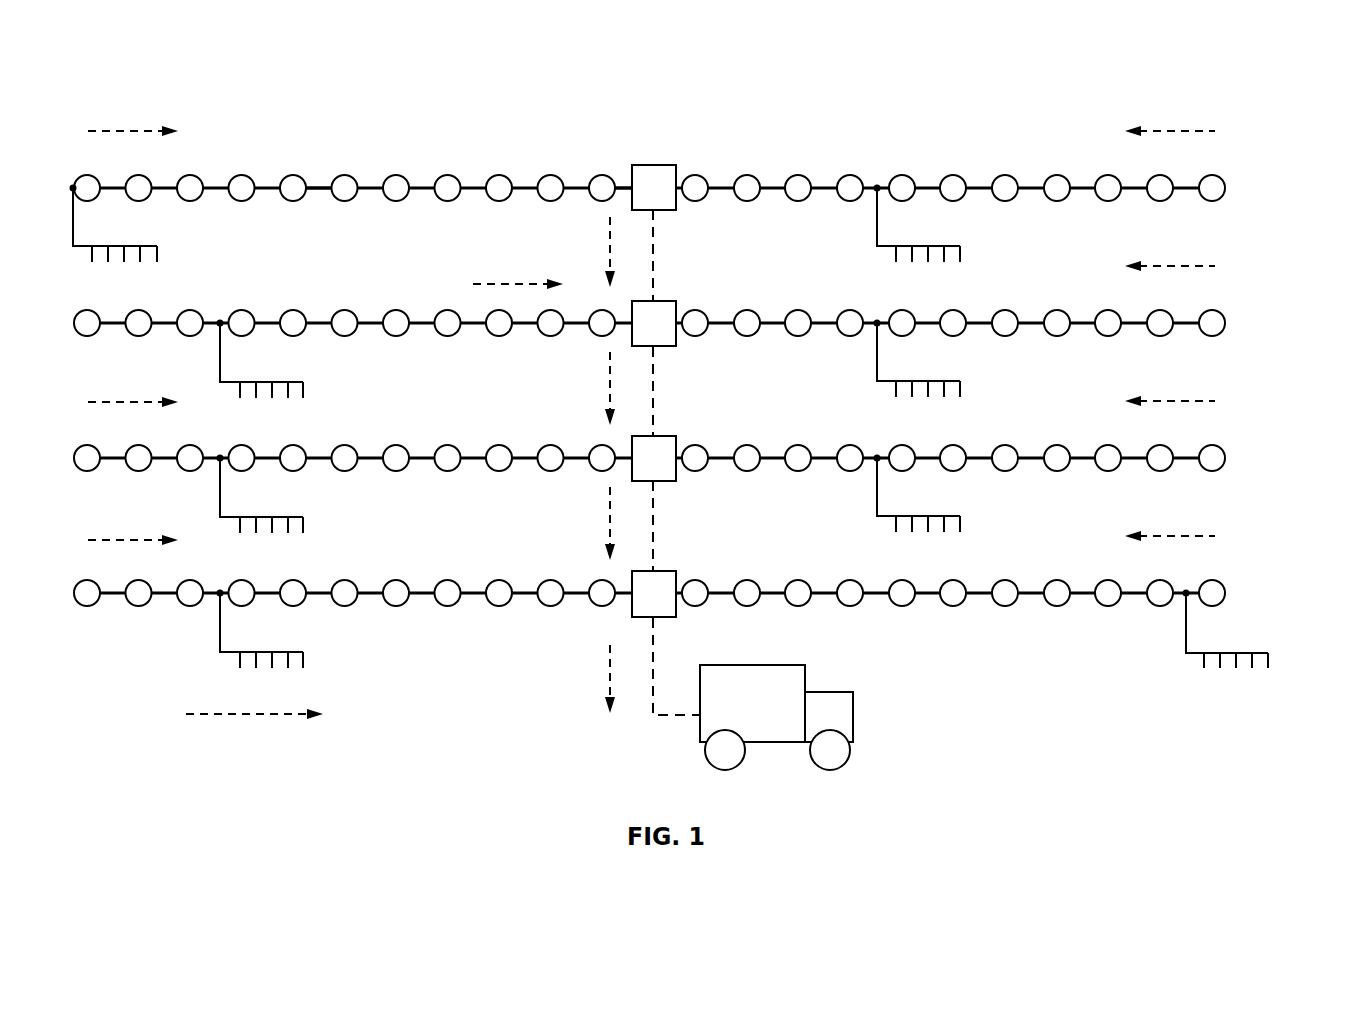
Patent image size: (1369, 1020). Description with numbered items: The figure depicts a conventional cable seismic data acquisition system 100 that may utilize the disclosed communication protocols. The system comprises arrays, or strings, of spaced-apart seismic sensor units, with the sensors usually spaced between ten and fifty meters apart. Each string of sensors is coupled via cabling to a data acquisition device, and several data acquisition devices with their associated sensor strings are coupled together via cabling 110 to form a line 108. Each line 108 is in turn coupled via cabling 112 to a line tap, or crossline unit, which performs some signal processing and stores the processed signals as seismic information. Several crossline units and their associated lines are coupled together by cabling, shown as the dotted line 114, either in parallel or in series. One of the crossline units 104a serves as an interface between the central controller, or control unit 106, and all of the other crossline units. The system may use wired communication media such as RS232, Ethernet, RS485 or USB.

The cable seismic data acquisition system 100 is at (272, 66).
The interface crossline unit 104a is at (660, 571).
The central controller 106 is at (822, 692).
The line 108 is at (612, 207).
The cabling 110 is at (317, 199).
The cabling 112 is at (624, 187).
The dotted line 114 is at (655, 245).